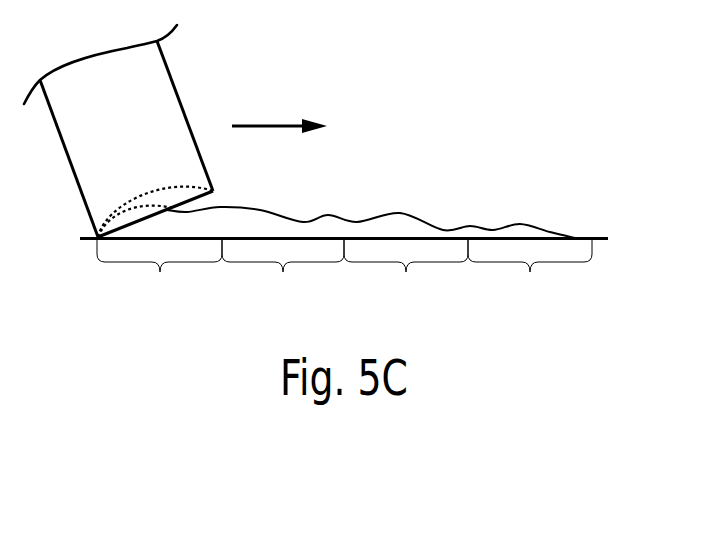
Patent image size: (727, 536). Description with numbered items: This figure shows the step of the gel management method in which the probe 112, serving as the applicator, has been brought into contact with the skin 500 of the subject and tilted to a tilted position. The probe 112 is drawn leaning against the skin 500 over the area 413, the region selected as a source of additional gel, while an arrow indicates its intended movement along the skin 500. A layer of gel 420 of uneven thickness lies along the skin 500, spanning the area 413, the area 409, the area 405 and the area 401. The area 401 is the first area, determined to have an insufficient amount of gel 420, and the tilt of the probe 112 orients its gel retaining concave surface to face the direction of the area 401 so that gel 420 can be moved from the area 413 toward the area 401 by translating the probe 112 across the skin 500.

The probe 112 is at (155, 96).
The gel 420 is at (410, 220).
The skin 500 is at (597, 238).
The area 413 is at (159, 271).
The third region 409 is at (283, 271).
The second region 405 is at (406, 271).
The area 401 is at (530, 271).